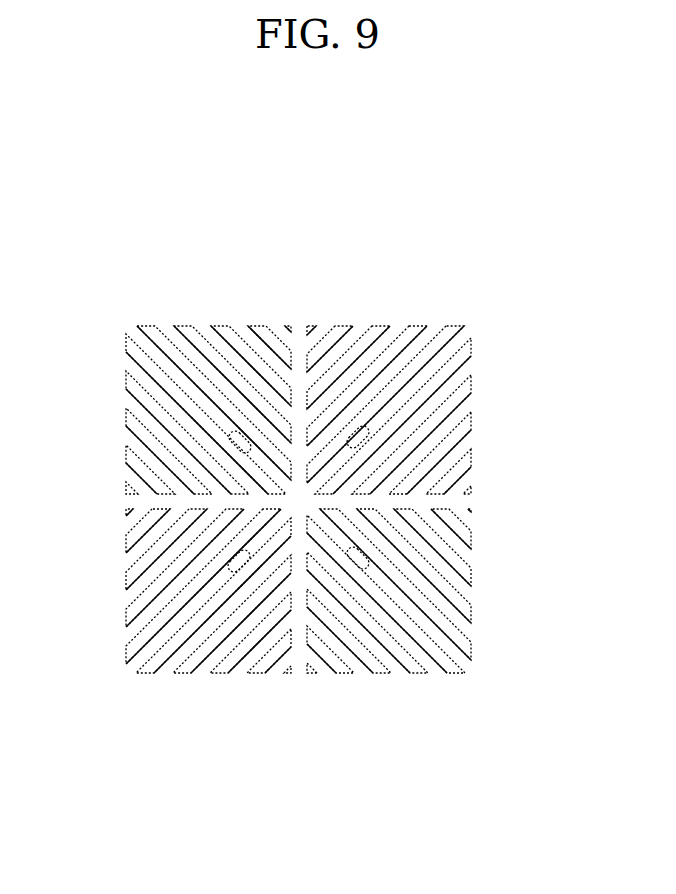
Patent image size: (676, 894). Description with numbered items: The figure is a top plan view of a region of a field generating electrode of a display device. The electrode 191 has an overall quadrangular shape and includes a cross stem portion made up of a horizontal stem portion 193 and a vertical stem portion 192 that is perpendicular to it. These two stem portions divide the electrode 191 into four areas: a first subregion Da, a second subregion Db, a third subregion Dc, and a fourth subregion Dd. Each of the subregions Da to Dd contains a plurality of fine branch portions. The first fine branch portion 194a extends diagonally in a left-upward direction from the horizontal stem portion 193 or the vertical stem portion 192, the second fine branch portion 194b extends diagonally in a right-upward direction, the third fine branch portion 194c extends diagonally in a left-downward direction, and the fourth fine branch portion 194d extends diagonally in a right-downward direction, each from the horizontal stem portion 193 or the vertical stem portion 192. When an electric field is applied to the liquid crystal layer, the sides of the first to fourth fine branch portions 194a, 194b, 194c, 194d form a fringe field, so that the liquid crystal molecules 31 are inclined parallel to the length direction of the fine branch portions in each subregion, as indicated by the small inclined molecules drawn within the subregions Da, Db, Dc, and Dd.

The electrode 191 is at (295, 486).
The vertical stem portion 192 is at (307, 380).
The horizontal stem portion 193 is at (360, 532).
The first fine branch portion 194a is at (235, 363).
The second fine branch portion 194b is at (420, 352).
The third fine branch portion 194c is at (158, 615).
The fourth fine branch portion 194d is at (433, 642).
The liquid crystal molecules 31 is at (352, 447).
The first subregion Da is at (226, 424).
The second subregion Db is at (408, 421).
The third subregion Dc is at (227, 603).
The fourth subregion Dd is at (408, 603).